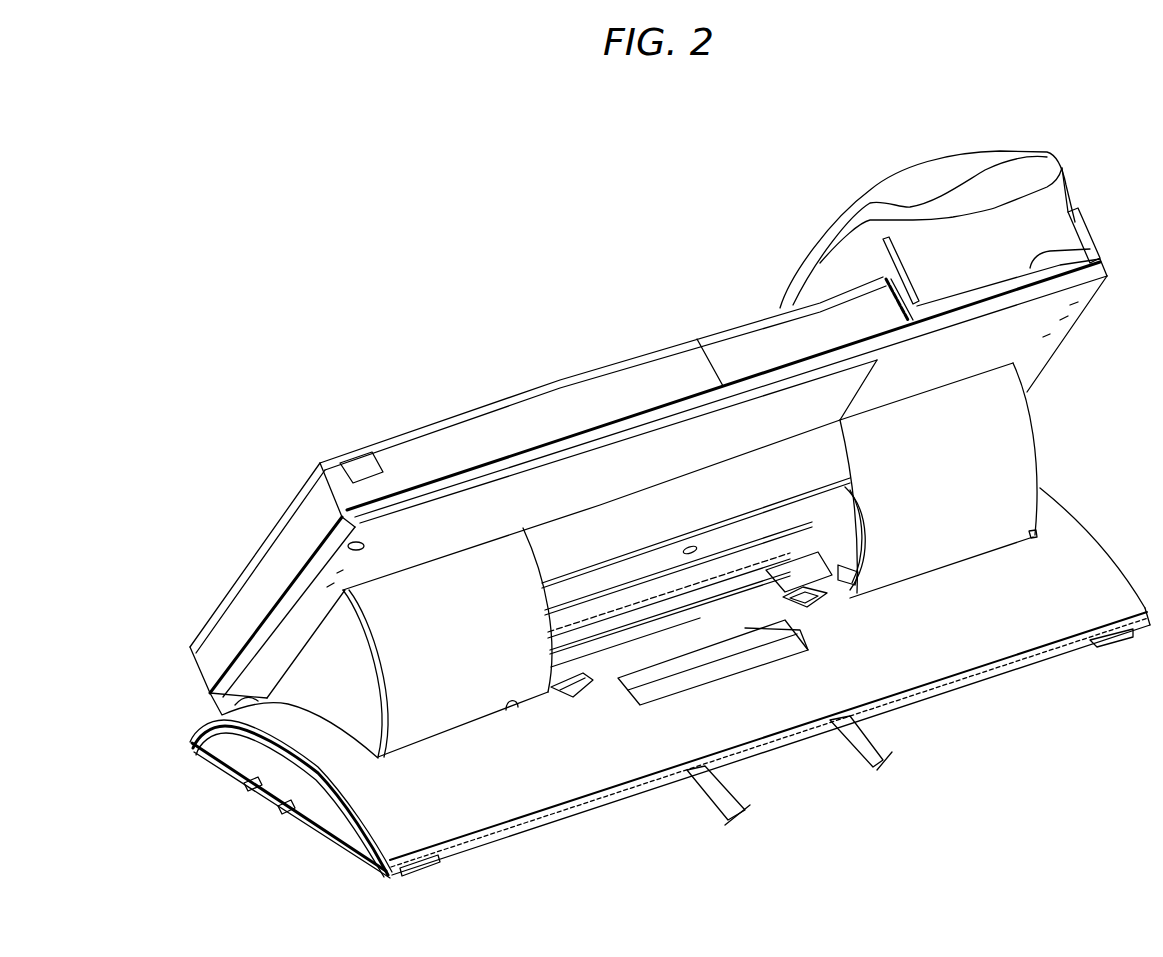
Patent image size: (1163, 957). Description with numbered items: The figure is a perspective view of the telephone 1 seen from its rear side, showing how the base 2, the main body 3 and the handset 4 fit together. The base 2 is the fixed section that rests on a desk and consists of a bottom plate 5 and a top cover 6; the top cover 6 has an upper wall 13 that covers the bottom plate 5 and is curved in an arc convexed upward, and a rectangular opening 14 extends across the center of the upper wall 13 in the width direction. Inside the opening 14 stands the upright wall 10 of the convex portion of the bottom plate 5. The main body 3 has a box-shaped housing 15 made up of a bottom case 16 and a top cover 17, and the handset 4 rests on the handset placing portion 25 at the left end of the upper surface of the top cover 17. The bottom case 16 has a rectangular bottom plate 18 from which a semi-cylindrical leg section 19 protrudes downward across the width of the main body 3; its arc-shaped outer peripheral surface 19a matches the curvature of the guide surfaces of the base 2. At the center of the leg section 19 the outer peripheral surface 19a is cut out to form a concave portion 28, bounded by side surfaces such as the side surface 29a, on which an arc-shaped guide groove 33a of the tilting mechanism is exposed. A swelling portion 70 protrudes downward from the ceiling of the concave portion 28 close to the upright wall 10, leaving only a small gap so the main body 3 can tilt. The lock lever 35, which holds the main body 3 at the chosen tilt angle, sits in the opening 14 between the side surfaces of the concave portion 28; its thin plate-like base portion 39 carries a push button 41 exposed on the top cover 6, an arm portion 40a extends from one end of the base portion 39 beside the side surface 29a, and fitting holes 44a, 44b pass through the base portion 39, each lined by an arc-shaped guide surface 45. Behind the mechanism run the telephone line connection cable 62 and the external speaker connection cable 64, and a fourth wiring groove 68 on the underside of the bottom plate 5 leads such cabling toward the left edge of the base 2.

The telephone 1 is at (1103, 200).
The base 2 is at (1104, 533).
The main body 3 is at (289, 482).
The handset 4 is at (900, 170).
The bottom plate 5 is at (328, 847).
The top cover 6 is at (240, 779).
The upright wall 10 is at (620, 612).
The upper wall 13 is at (489, 825).
The opening 14 is at (512, 712).
The housing 15 is at (464, 364).
The bottom case 16 is at (460, 497).
The top cover 17 is at (416, 465).
The bottom plate 18 is at (317, 603).
The leg section 19 is at (327, 668).
The outer peripheral surface 19a is at (438, 722).
The handset placing portion 25 is at (1060, 251).
The concave portion 28 is at (842, 465).
The side surface 29a is at (853, 497).
The guide groove 33a is at (850, 578).
The lock lever 35 is at (667, 666).
The base portion 39 is at (718, 630).
The arm portion 40a is at (856, 540).
The push button 41 is at (773, 653).
The fitting hole 44a is at (820, 598).
The fitting hole 44b is at (568, 690).
The guide surface 45 is at (812, 600).
The telephone line connection cable 62 is at (727, 797).
The external speaker connection cable 64 is at (873, 745).
The fourth wiring groove 68 is at (265, 800).
The swelling portion 70 is at (662, 590).